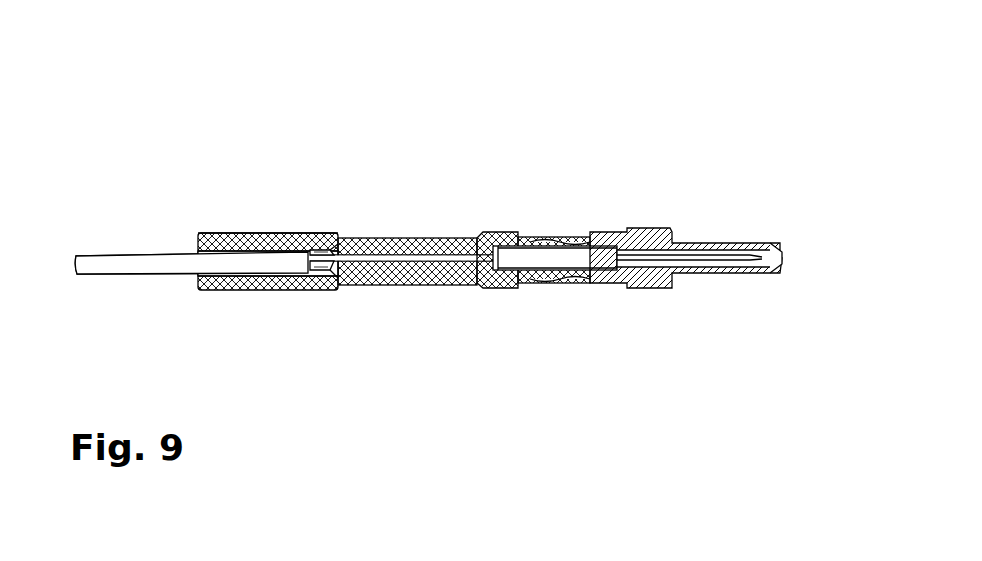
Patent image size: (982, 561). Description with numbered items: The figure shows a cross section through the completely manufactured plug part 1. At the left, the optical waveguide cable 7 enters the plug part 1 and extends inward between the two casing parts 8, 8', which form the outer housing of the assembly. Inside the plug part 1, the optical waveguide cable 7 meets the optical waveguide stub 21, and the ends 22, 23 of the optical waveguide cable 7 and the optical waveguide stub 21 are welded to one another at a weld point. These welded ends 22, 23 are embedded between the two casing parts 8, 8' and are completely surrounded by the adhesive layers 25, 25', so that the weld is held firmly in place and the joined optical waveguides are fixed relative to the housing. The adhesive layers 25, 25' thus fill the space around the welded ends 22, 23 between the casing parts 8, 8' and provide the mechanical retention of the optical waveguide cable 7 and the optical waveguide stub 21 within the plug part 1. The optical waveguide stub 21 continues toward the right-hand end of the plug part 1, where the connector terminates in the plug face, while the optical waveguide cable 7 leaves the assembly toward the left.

The plug part 1 is at (468, 92).
The optical waveguide cable 7 is at (130, 267).
The casing part 8 is at (206, 269).
The casing part 8' is at (268, 189).
The optical waveguide stub 21 is at (520, 263).
The end 22 is at (404, 314).
The end 23 is at (412, 285).
The adhesive layer 25 is at (343, 275).
The adhesive layer 25' is at (353, 218).